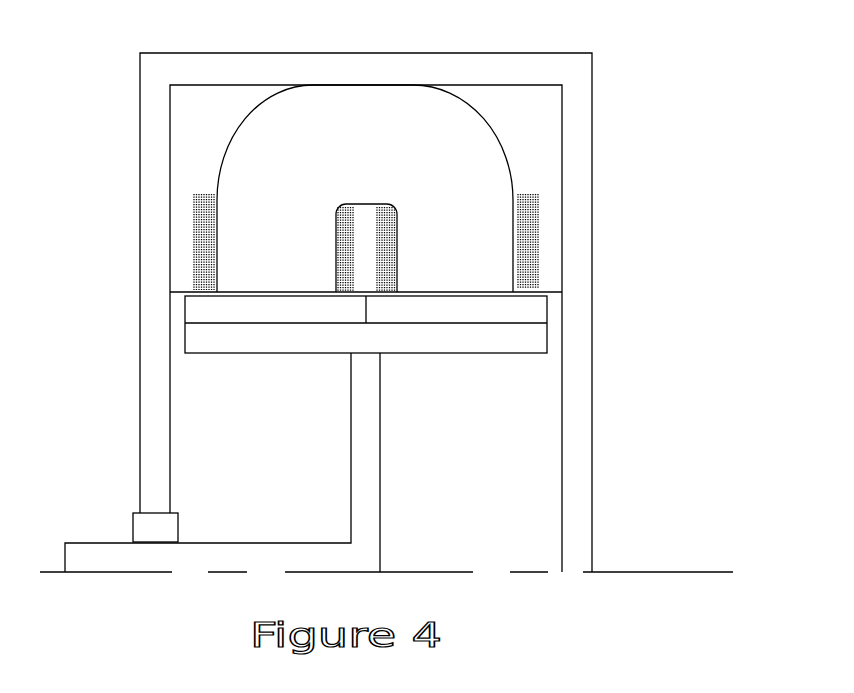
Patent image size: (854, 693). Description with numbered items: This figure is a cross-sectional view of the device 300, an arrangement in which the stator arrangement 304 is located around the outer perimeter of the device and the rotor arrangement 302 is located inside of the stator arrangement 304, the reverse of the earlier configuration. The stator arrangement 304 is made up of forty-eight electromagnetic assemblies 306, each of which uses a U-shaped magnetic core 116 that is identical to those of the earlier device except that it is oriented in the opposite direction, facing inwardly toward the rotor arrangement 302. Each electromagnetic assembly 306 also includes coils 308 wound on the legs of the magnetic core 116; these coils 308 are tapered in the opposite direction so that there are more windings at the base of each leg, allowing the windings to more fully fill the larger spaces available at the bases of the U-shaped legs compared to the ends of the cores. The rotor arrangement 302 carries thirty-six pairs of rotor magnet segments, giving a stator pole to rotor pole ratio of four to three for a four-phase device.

The magnetic core 116 is at (293, 140).
The device 300 is at (632, 68).
The rotor arrangement 302 is at (452, 120).
The stator arrangement 304 is at (422, 352).
The electromagnetic assembly 306 is at (520, 170).
The coils 308 is at (537, 240).